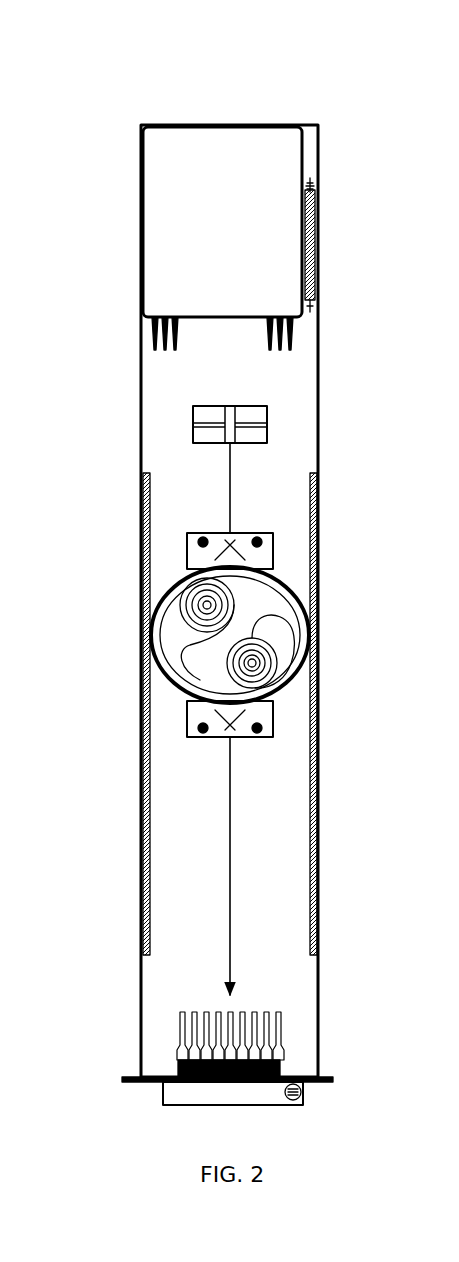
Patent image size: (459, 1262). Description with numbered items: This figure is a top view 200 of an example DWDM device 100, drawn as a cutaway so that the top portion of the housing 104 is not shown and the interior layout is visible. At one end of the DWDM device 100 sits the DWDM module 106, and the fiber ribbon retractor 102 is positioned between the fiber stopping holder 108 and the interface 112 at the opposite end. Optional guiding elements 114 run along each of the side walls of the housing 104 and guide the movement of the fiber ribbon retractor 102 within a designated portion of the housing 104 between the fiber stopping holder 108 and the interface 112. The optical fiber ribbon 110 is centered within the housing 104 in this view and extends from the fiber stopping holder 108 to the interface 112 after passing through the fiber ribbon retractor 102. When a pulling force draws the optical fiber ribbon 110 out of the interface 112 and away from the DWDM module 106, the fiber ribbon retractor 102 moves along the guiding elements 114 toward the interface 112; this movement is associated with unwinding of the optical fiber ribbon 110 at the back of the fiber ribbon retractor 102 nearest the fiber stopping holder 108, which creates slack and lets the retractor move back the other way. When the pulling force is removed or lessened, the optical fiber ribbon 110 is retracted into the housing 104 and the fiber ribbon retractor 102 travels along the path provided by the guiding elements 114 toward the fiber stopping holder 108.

The top view 200 is at (102, 53).
The DWDM device 100 is at (103, 152).
The fiber ribbon retractor 102 is at (283, 569).
The housing 104 is at (319, 363).
The DWDM module 106 is at (160, 257).
The fiber stopping holder 108 is at (190, 419).
The optical fiber ribbon 110 is at (234, 500).
The interface 112 is at (167, 1057).
The guiding elements 114 is at (147, 772).